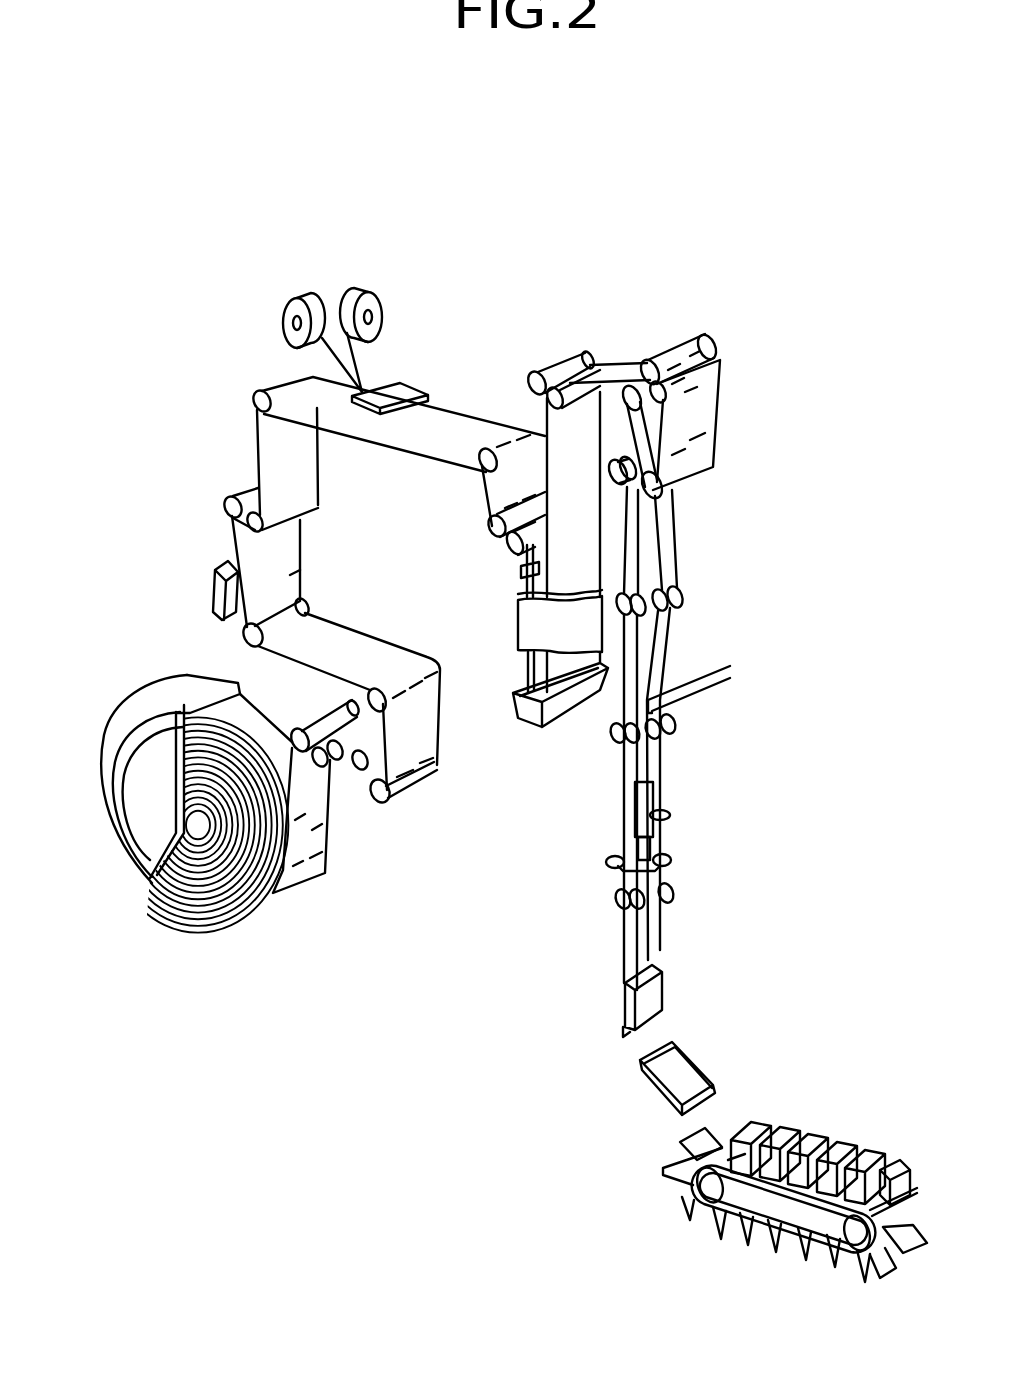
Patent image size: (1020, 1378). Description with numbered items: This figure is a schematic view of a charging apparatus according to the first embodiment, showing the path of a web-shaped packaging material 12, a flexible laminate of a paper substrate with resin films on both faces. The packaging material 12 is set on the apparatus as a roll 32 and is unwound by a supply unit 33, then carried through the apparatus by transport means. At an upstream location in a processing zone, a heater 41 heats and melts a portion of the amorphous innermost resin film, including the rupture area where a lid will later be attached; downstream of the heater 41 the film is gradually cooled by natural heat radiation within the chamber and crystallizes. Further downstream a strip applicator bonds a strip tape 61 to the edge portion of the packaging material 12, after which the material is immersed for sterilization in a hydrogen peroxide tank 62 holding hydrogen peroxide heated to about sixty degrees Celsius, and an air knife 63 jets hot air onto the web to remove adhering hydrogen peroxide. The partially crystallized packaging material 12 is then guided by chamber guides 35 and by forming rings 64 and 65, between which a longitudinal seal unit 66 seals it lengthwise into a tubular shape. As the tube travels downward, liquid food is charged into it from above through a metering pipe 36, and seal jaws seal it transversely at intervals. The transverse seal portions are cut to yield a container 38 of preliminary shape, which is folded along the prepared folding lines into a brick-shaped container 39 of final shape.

The packaging material 12 is at (480, 408).
The roll 32 is at (172, 905).
The supply unit 33 is at (124, 864).
The chamber guides 35 is at (690, 598).
The metering pipe 36 is at (703, 676).
The container having a preliminary shape 38 is at (700, 1070).
The container having a predetermined final shape 39 is at (858, 1155).
The heater 41 is at (214, 597).
The strip tape 61 is at (345, 298).
The hydrogen peroxide tank 62 is at (532, 735).
The air knife 63 is at (632, 376).
The forming ring 64 is at (682, 730).
The forming ring 65 is at (685, 870).
The longitudinal seal unit 66 is at (656, 804).